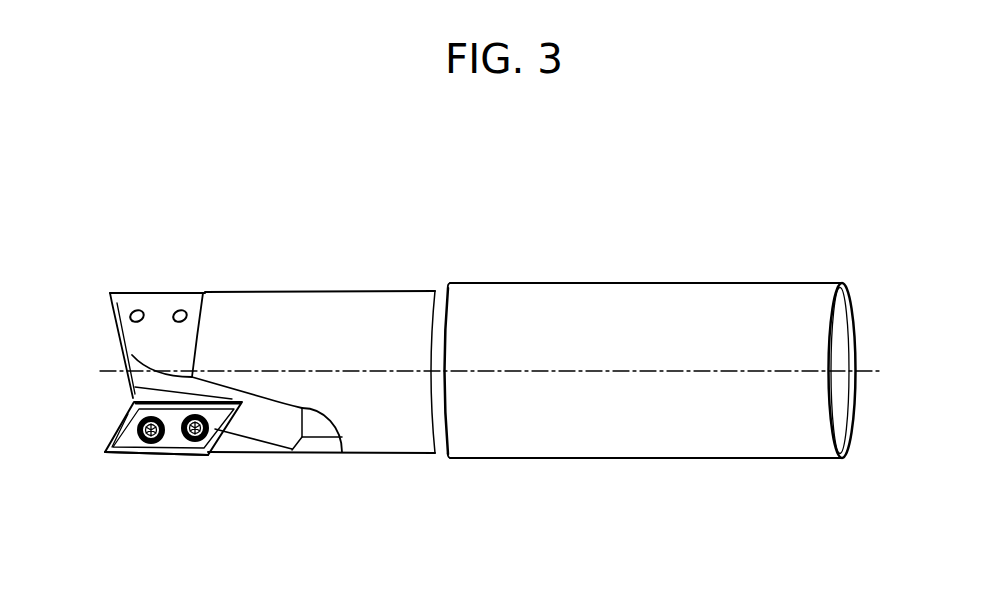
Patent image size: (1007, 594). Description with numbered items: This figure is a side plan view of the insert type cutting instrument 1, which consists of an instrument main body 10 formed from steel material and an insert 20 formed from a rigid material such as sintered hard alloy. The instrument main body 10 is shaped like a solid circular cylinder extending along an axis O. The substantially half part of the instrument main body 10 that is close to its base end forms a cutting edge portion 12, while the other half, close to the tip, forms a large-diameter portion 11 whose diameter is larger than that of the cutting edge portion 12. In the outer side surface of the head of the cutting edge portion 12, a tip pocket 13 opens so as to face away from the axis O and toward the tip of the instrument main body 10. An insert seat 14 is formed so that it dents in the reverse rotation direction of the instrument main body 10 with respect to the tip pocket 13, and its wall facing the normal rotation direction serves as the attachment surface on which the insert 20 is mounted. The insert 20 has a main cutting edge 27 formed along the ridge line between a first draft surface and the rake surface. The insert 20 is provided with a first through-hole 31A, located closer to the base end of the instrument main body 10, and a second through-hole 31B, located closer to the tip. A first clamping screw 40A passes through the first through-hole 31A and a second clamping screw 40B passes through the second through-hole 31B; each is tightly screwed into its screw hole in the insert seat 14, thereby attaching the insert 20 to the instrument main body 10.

The insert type cutting instrument 1 is at (741, 162).
The instrument main body 10 is at (589, 248).
The large-diameter portion 11 is at (745, 298).
The cutting edge portion 12 is at (388, 292).
The tip pocket 13 is at (312, 454).
The insert seat 14 is at (277, 391).
The insert 20 is at (94, 449).
The main cutting edge 27 is at (127, 457).
The first through-hole 31A is at (193, 412).
The second through-hole 31B is at (157, 412).
The first clamping screw 40A is at (184, 444).
The second clamping screw 40B is at (142, 444).
The axis O is at (872, 371).